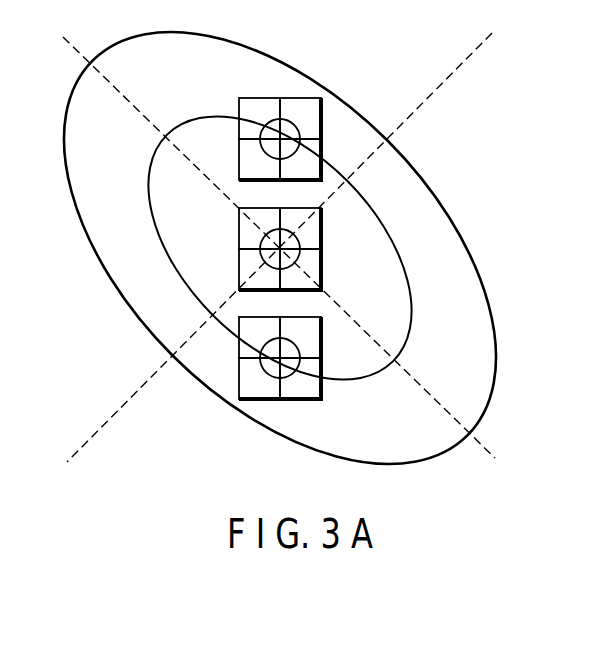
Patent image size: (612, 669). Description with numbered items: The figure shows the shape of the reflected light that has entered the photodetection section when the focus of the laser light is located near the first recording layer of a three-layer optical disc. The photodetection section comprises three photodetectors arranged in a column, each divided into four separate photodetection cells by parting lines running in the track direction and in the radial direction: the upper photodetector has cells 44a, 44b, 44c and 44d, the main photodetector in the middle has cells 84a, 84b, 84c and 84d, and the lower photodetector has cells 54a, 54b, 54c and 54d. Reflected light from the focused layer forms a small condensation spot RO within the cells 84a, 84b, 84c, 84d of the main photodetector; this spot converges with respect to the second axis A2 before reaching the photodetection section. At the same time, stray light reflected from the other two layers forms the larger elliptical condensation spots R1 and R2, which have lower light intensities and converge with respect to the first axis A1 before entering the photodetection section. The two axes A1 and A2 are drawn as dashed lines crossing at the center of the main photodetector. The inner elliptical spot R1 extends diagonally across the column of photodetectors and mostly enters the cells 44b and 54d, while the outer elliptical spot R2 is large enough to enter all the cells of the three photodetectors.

The photodetection cell 44a is at (238, 105).
The photodetection cell 44b is at (238, 168).
The photodetection cell 44c is at (322, 157).
The photodetection cell 44d is at (322, 106).
The photodetection cell 84a is at (238, 228).
The photodetection cell 84b is at (238, 270).
The photodetection cell 84c is at (322, 280).
The photodetection cell 84d is at (322, 223).
The photodetection cell 54a is at (238, 347).
The photodetection cell 54b is at (238, 387).
The photodetection cell 54c is at (322, 386).
The photodetection cell 54d is at (322, 330).
The condensation spot R1 is at (392, 364).
The condensation spot R2 is at (447, 213).
The condensation spot RO is at (280, 249).
The first axis A1 is at (472, 52).
The second axis A2 is at (475, 439).